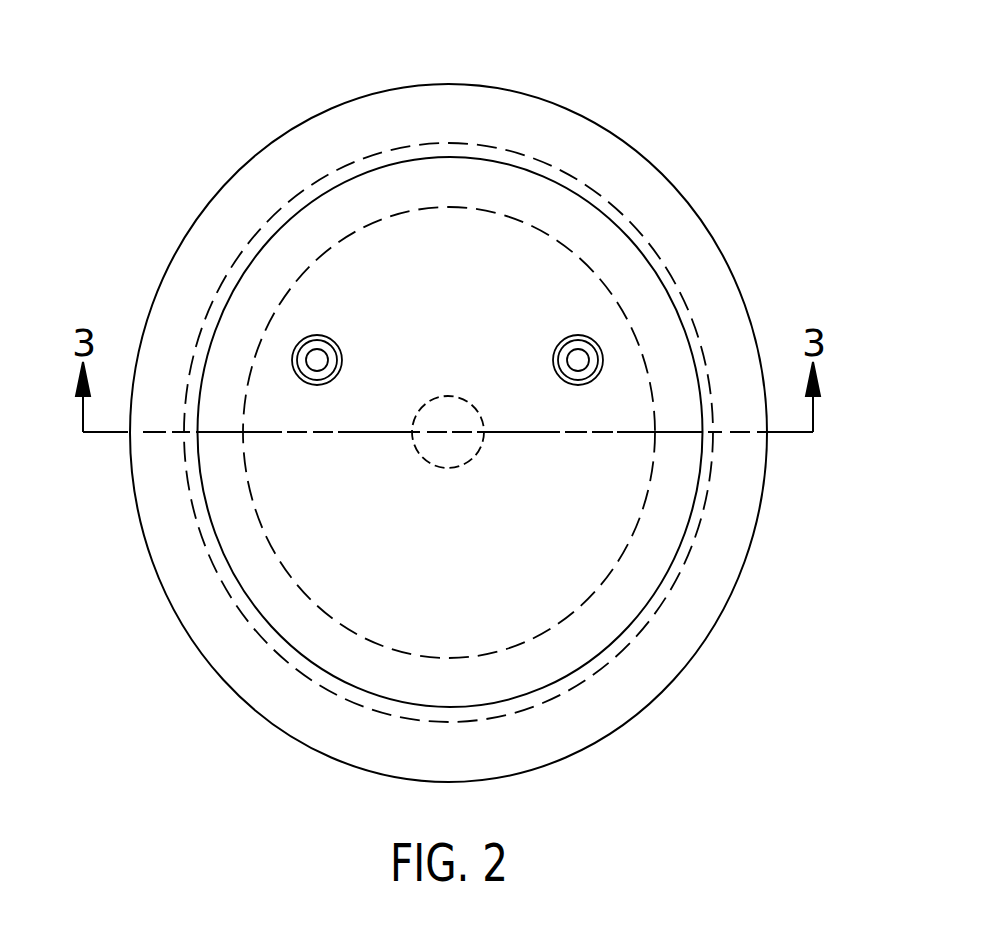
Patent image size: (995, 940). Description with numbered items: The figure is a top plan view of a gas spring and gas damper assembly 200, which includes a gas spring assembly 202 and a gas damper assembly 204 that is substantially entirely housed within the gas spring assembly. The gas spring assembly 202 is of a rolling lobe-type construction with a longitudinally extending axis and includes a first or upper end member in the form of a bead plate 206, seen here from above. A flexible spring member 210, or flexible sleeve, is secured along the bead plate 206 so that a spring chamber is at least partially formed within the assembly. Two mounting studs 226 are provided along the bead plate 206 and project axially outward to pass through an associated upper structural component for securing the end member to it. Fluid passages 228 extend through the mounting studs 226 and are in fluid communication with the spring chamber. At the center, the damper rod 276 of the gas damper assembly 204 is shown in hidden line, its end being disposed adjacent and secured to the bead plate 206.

The gas spring and gas damper assembly 200 is at (690, 116).
The gas spring assembly 202 is at (562, 110).
The gas damper assembly 204 is at (358, 206).
The bead plate 206 is at (632, 283).
The flexible spring member 210 is at (235, 215).
The mounting studs 226 is at (341, 368).
The fluid passages 228 is at (323, 350).
The damper rod 276 is at (440, 468).